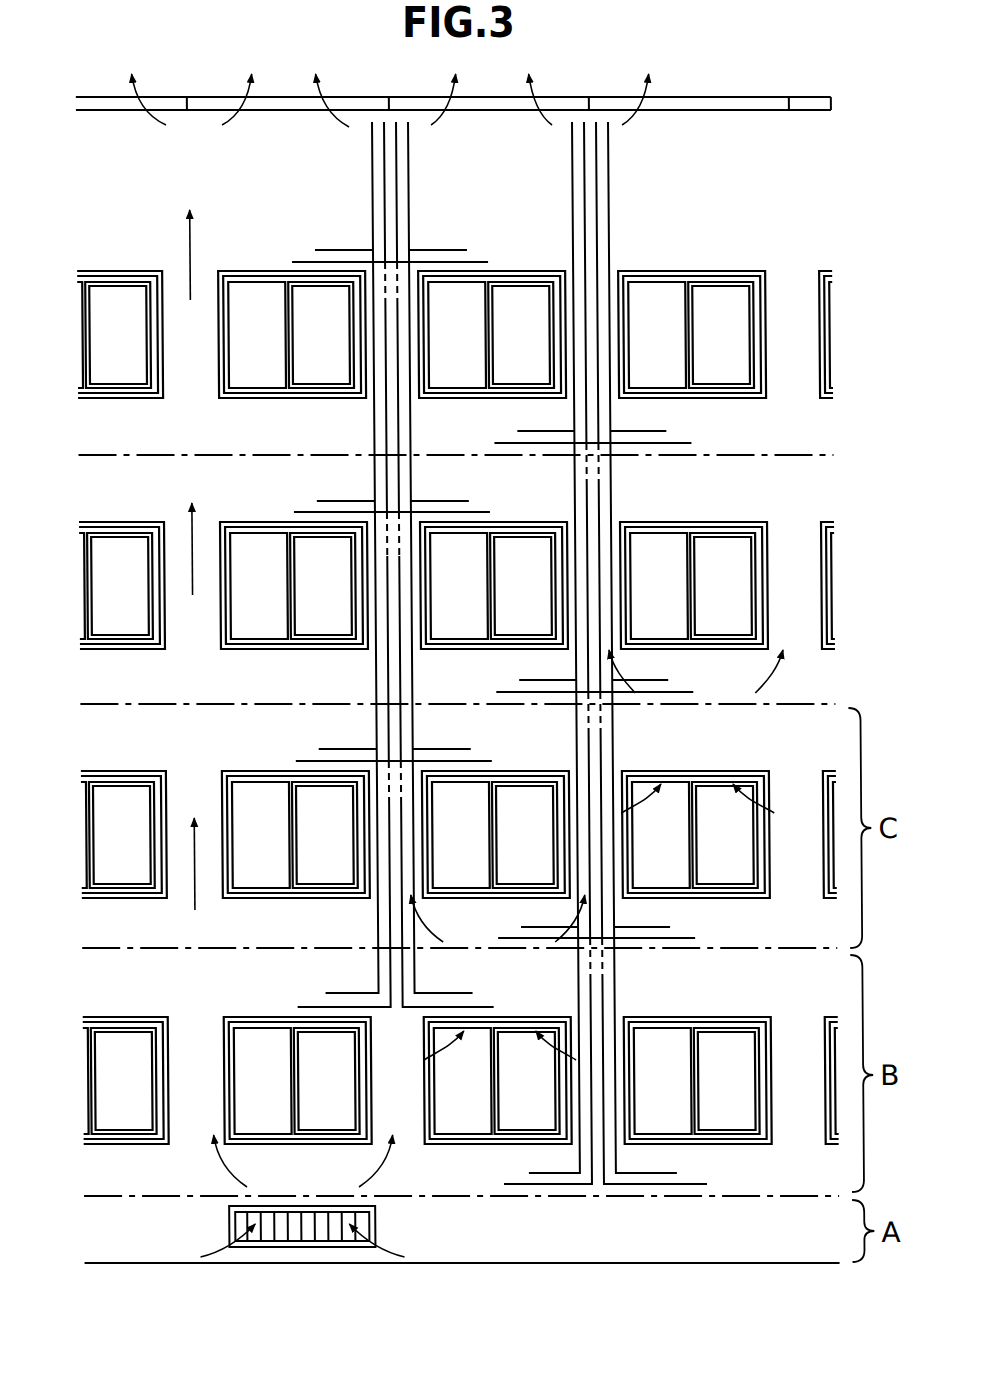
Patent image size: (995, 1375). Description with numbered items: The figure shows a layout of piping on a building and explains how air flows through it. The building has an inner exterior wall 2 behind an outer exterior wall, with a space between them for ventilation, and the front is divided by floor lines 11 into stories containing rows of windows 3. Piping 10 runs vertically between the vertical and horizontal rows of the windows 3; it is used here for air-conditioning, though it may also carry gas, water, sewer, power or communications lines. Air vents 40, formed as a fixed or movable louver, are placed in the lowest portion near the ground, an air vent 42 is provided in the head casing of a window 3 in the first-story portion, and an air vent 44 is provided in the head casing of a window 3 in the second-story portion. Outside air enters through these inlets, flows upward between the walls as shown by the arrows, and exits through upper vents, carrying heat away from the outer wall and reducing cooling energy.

The inner exterior wall 2 is at (106, 1250).
The window 3 is at (110, 1120).
The piping 10 is at (418, 189).
The floor line 11 is at (832, 455).
The air vents 40 is at (368, 1228).
The air vent 42 is at (510, 1033).
The air vent 44 is at (708, 787).